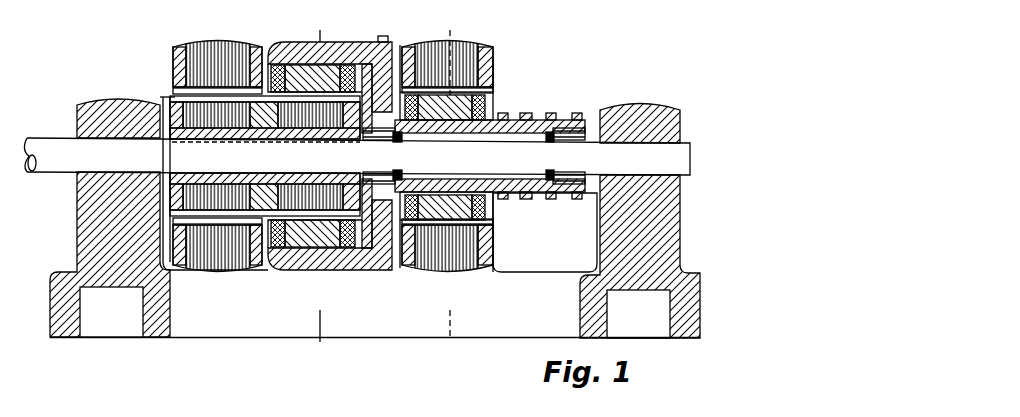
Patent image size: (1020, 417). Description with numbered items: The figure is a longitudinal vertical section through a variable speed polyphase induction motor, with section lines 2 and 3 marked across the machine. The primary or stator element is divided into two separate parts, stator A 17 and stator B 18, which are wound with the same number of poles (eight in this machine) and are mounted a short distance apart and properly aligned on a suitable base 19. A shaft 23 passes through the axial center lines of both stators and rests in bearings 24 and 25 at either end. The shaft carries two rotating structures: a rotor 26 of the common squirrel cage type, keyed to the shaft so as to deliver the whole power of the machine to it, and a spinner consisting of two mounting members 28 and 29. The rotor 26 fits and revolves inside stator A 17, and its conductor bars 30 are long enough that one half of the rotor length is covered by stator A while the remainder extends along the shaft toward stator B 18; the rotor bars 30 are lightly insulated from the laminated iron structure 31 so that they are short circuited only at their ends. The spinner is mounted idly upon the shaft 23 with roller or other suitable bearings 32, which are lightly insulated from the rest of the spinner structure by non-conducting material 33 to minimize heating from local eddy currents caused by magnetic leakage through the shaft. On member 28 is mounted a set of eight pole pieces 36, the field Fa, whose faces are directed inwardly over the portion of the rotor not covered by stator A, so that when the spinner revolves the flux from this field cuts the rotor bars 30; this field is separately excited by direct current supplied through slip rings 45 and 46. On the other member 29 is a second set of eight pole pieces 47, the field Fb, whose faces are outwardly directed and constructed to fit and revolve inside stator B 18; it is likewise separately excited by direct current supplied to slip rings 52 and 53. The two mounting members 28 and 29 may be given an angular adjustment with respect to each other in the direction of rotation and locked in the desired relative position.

The section line 2- 2 is at (319, 186).
The section line 3- 3 is at (450, 186).
The stator A 17 is at (207, 272).
The stator B 18 is at (455, 272).
The base 19 is at (389, 328).
The shaft 23 is at (73, 156).
The bearing 24 is at (100, 136).
The bearing 25 is at (647, 175).
The rotor 26 is at (271, 126).
The mounting member 28 is at (336, 42).
The mounting member 29 is at (482, 126).
The conductor bars 30 is at (163, 95).
The laminated iron structure 31 is at (227, 126).
The bearings 32 is at (377, 141).
The non-conducting material 33 is at (392, 173).
The pole pieces 36 is at (283, 66).
The slip ring 45 is at (505, 113).
The slip ring 46 is at (527, 113).
The pole pieces 47 is at (463, 118).
The slip ring 52 is at (553, 113).
The slip ring 53 is at (577, 113).